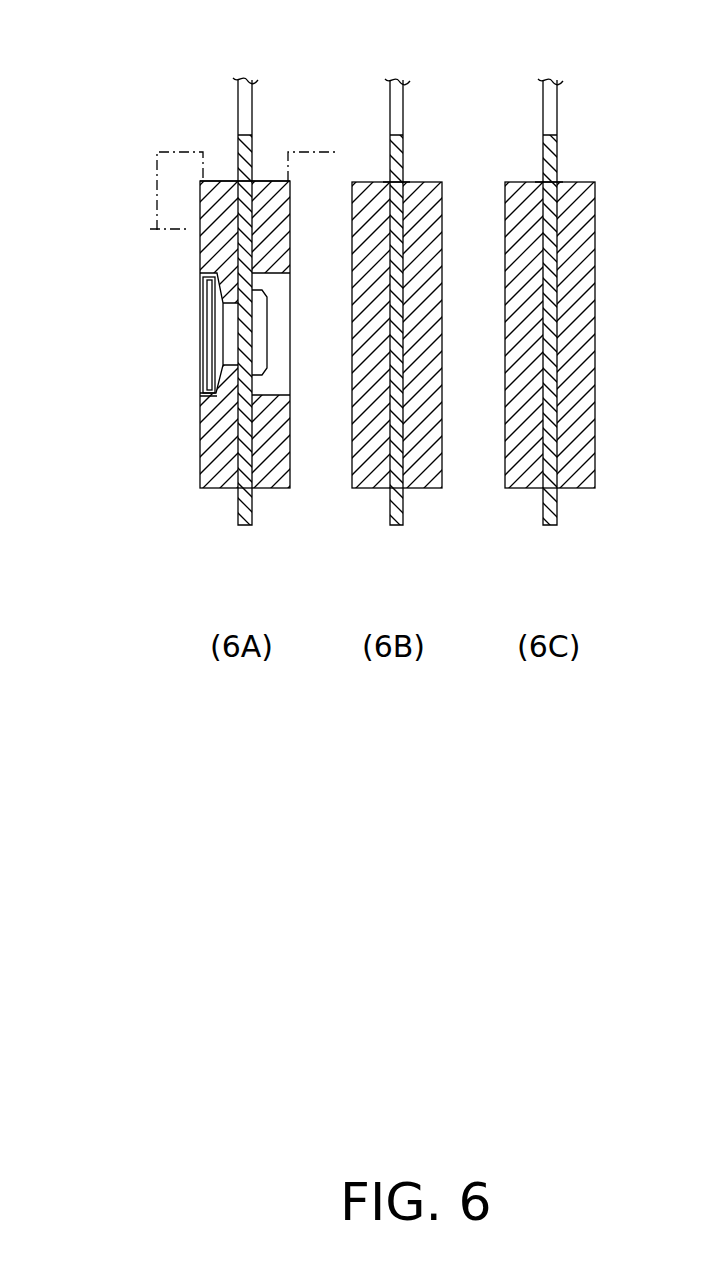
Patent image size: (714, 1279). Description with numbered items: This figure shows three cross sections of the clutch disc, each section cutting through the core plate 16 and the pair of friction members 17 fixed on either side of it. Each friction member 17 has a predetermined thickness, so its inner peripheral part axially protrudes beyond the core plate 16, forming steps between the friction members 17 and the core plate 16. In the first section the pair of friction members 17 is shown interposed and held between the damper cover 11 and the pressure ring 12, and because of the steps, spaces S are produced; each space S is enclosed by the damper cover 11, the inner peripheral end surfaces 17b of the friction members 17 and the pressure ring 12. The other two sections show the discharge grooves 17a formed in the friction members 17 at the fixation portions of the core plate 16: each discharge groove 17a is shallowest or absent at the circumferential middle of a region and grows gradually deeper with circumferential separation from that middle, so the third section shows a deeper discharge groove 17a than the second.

The damper cover 11 is at (307, 170).
The pressure ring 12 is at (163, 172).
The core plate 16 is at (245, 78).
The friction member 17 is at (272, 480).
The discharge groove 17a is at (385, 185).
The inner peripheral end surface 17b is at (270, 180).
The space S is at (282, 170).